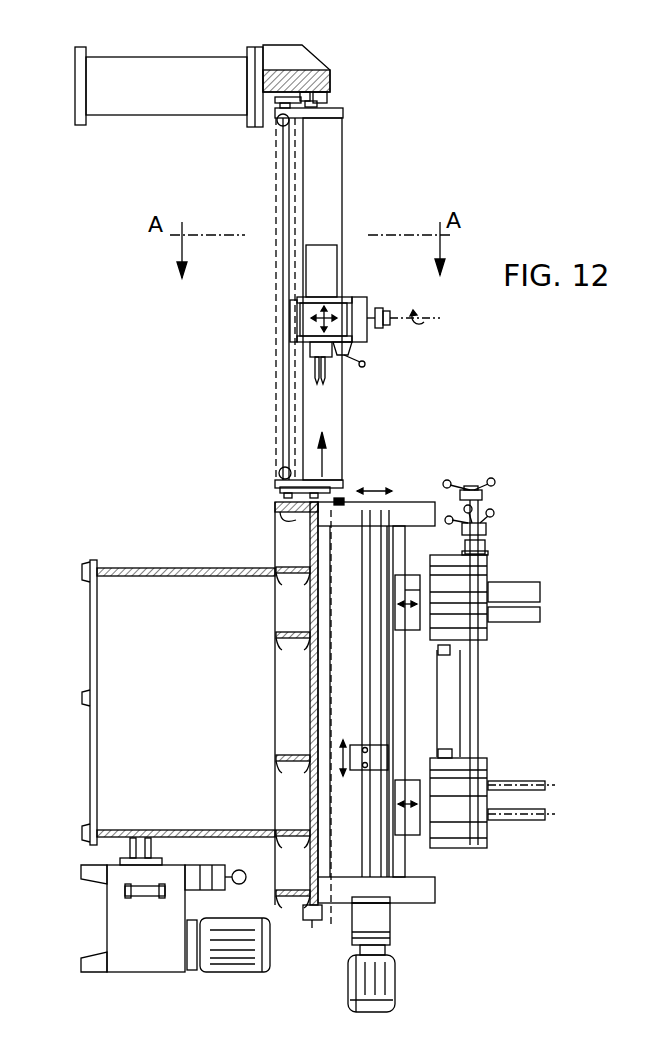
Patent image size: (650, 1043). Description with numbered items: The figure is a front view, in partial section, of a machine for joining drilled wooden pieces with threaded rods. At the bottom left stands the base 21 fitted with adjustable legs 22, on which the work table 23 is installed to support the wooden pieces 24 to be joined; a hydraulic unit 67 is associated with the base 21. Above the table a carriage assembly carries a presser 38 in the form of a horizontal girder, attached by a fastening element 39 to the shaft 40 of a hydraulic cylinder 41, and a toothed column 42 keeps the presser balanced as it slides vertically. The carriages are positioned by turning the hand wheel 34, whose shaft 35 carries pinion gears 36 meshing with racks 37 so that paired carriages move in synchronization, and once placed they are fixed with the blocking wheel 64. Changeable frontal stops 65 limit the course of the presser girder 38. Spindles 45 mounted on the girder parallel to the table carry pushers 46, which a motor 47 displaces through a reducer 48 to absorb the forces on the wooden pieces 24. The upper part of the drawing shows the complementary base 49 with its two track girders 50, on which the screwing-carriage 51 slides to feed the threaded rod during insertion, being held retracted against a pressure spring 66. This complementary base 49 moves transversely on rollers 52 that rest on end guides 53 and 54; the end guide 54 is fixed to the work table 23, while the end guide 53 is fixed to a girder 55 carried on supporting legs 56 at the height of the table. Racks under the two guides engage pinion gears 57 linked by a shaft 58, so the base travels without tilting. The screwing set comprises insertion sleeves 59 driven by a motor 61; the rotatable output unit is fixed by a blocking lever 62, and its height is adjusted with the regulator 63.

The base 21 is at (145, 567).
The adjustable legs 22 is at (80, 688).
The work table 23 is at (300, 705).
The wooden pieces 24 is at (300, 575).
The hand wheel 34 is at (478, 490).
The shaft 35 is at (480, 708).
The pinion gears 36 is at (488, 657).
The racks 37 is at (451, 750).
The presser 38 is at (392, 650).
The fastening element 39 is at (405, 585).
The shaft 40 is at (465, 546).
The hydraulic cylinder 41 is at (525, 590).
The toothed column 42 is at (525, 616).
The spindles 45 is at (398, 520).
The pushers 46 is at (352, 772).
The motor 47 is at (385, 982).
The reducer 48 is at (375, 920).
The complementary base 49 is at (330, 116).
The track girders 50 is at (327, 200).
The screwing-carriage 51 is at (318, 313).
The rollers 52 is at (336, 498).
The end guide 53 is at (268, 73).
The end guide 54 is at (292, 515).
The girder 55 is at (330, 70).
The supporting legs 56 is at (128, 95).
The pinion gears 57 is at (279, 104).
The shaft 58 is at (292, 347).
The insertion sleeves 59 is at (316, 383).
The motor 61 is at (327, 255).
The blocking lever 62 is at (366, 364).
The regulator 63 is at (392, 328).
The blocking wheel 64 is at (488, 527).
The frontal stops 65 is at (380, 525).
The pressure spring 66 is at (297, 238).
The hydraulic unit 67 is at (107, 912).